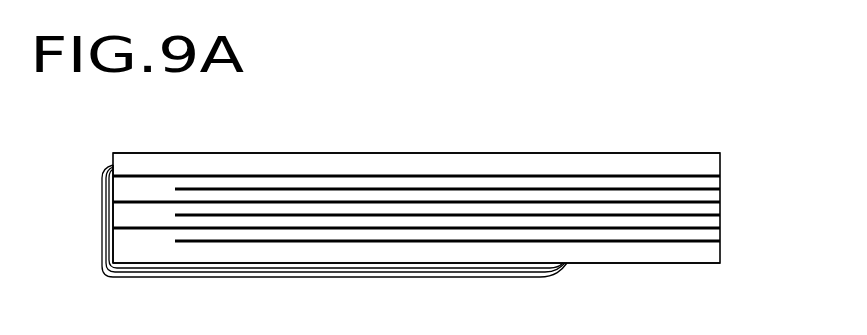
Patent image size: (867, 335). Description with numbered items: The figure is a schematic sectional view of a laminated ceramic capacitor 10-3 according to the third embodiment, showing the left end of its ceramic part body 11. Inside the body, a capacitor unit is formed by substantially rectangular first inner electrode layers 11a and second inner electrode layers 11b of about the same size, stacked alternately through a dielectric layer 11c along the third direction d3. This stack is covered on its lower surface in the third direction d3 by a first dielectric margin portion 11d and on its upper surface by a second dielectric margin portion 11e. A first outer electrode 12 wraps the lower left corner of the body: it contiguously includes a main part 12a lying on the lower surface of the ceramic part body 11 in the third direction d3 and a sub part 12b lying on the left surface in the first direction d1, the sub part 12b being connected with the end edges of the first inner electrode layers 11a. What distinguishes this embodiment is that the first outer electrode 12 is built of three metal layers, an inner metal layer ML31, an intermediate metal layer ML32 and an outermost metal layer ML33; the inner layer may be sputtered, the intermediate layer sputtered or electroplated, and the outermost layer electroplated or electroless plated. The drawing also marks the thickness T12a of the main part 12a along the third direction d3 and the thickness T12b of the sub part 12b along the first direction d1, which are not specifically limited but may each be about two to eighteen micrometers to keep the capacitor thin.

The laminated ceramic capacitor 10-3 is at (191, 152).
The ceramic part body 11 is at (449, 211).
The first inner electrode layer 11a is at (721, 169).
The second inner electrode layer 11b is at (721, 188).
The dielectric layer 11c is at (721, 208).
The first dielectric margin portion 11d is at (618, 254).
The second dielectric margin portion 11e is at (620, 160).
The first outer electrode 12 is at (302, 248).
The main part 12a is at (318, 277).
The sub part 12b is at (102, 214).
The inner metal layer ML31 is at (240, 268).
The intermediate metal layer ML32 is at (185, 273).
The outermost metal layer ML33 is at (130, 277).
The thickness of main part T12a is at (573, 250).
The thickness of sub part T12b is at (130, 140).
The first direction d1 is at (645, 127).
The third direction d3 is at (662, 142).